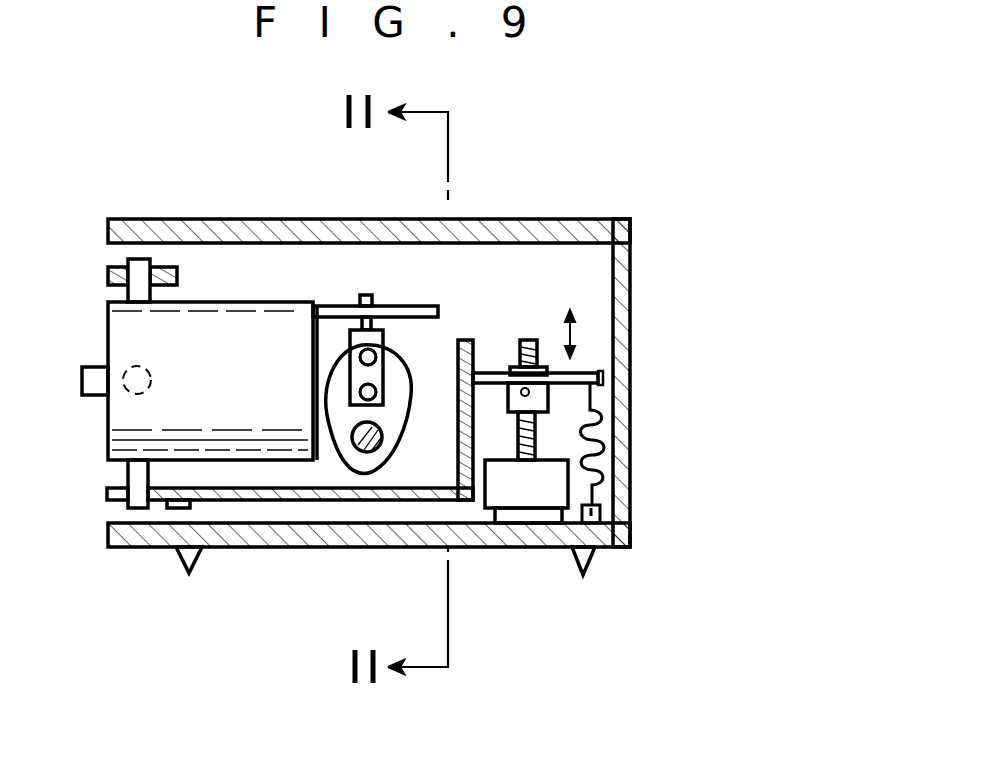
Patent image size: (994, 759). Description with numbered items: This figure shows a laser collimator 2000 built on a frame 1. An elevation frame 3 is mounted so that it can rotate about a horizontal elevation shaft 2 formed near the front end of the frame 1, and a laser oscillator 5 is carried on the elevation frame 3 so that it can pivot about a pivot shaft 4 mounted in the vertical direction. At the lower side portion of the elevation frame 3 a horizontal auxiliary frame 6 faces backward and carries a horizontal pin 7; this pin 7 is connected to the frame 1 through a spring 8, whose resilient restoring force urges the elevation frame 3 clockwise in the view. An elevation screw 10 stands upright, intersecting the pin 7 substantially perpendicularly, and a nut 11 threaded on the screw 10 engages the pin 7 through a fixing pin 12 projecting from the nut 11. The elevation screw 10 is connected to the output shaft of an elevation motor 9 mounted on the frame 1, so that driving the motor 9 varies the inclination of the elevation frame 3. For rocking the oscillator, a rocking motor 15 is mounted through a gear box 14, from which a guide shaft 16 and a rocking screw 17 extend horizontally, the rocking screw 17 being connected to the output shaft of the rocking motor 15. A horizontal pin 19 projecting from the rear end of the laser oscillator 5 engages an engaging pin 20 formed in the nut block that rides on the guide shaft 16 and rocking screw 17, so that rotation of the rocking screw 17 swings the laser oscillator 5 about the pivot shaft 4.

The frame 1 is at (502, 220).
The horizontal elevation shaft 2 is at (133, 393).
The elevation frame 3 is at (108, 273).
The pivot shaft 4 is at (140, 258).
The laser oscillator 5 is at (229, 425).
The horizontal auxiliary frame 6 is at (343, 500).
The horizontal pin 7 is at (600, 376).
The spring 8 is at (600, 455).
The elevation motor 9 is at (532, 513).
The elevation screw 10 is at (528, 340).
The nut 11 is at (548, 403).
The fixing pin 12 is at (538, 493).
The gear box 14 is at (330, 440).
The rocking motor 15 is at (372, 452).
The guide shaft 16 is at (378, 358).
The rocking screw 17 is at (380, 395).
The horizontal pin 19 is at (335, 307).
The engaging pin 20 is at (367, 297).
The laser collimator 2000 is at (648, 286).